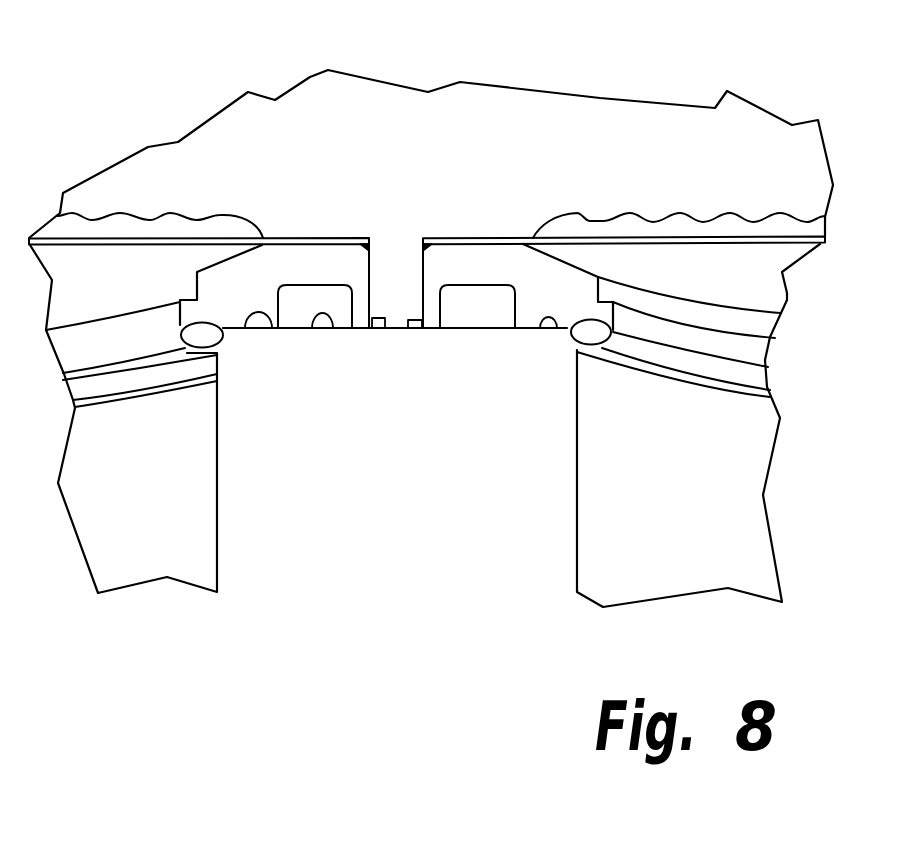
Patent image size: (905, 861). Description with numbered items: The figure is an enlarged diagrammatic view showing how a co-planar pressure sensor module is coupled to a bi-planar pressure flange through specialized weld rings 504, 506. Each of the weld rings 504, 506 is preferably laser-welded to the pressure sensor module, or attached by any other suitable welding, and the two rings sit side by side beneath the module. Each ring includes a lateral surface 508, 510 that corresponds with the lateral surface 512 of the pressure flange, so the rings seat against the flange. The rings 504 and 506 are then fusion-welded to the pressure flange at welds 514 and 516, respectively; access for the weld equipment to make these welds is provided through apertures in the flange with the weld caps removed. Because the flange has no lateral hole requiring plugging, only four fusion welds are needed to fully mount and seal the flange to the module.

The weld ring 504 is at (304, 238).
The weld ring 506 is at (488, 238).
The lateral surface 508 is at (272, 328).
The lateral surface 510 is at (540, 328).
The lateral surface 512 is at (312, 328).
The weld 514 is at (208, 331).
The weld 516 is at (571, 347).